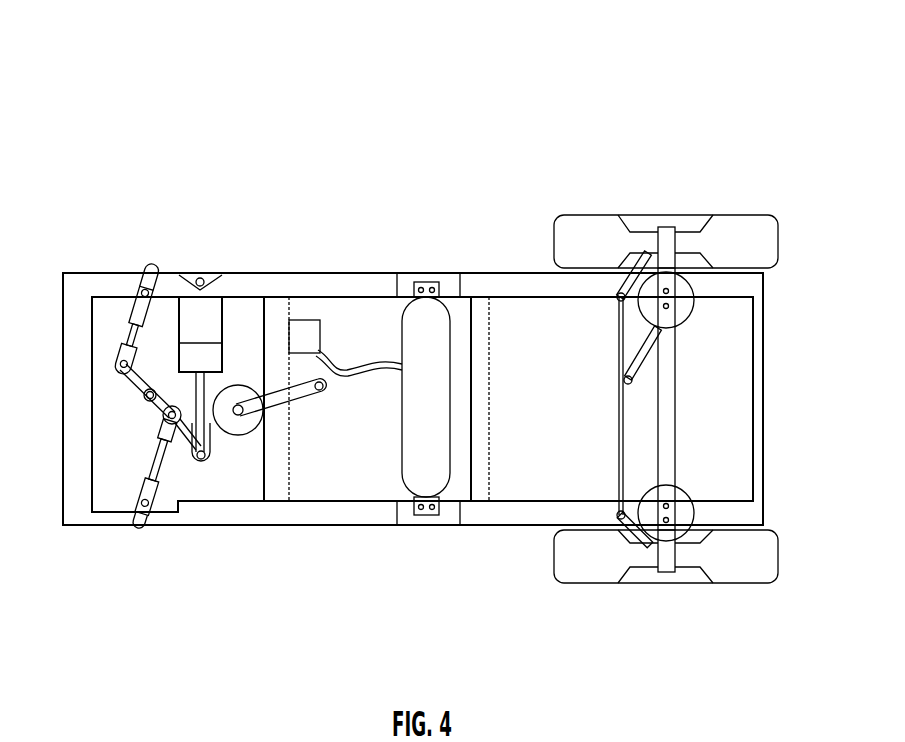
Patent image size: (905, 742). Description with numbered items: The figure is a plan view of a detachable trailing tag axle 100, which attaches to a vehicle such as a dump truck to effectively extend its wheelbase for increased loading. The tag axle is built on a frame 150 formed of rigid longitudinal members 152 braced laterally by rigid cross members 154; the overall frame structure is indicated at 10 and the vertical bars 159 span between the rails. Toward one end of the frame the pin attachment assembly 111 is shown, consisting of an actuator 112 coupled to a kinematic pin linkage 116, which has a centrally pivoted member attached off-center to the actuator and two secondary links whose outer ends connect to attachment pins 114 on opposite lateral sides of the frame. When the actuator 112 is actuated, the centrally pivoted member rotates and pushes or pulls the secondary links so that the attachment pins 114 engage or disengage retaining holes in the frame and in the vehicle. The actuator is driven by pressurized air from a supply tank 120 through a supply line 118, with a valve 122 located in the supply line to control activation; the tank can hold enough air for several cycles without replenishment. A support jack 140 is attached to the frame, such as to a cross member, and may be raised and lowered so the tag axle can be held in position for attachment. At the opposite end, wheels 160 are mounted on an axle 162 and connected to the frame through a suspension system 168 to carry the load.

The frame 10 is at (477, 526).
The trailing tag axle 100 is at (424, 113).
The pin attachment assembly 111 is at (236, 454).
The actuator 112 is at (203, 317).
The attachment pins 114 is at (145, 262).
The kinematic pin linkage 116 is at (103, 560).
The supply line 118 is at (352, 370).
The supply tank 120 is at (437, 333).
The valve 122 is at (294, 320).
The support jack 140 is at (237, 384).
The frame 150 is at (372, 513).
The longitudinal members 152 is at (515, 287).
The cross members 154 is at (72, 294).
The support bar 159 is at (277, 450).
The wheels 160 is at (715, 232).
The axle 162 is at (667, 387).
The suspension system 168 is at (637, 360).